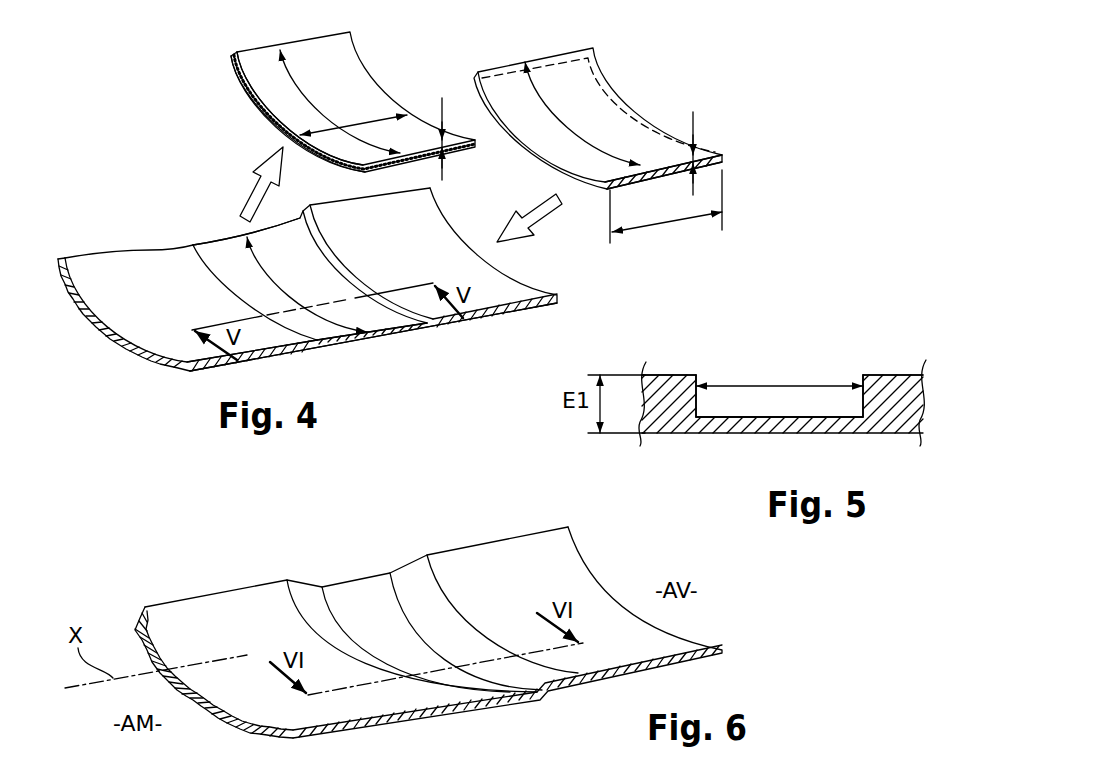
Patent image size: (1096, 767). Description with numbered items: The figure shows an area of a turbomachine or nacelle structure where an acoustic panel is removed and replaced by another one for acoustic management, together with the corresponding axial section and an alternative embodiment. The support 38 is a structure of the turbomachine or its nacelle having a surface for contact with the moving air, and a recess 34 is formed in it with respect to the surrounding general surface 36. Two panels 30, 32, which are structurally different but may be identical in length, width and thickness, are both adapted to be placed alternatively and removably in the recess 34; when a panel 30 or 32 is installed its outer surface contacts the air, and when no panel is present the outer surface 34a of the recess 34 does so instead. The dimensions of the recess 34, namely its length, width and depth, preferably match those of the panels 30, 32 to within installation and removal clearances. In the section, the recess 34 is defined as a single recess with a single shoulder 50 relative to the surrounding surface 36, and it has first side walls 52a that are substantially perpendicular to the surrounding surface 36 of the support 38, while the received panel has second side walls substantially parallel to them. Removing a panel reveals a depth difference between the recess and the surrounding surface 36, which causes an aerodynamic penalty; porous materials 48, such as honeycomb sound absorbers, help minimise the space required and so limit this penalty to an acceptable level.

In FIG. 4, the panel 30 is at (352, 59).
In FIG. 4, the panel 32 is at (563, 52).
In FIG. 4, the recess 34 is at (380, 323).
In FIG. 5, the recess 34 is at (743, 400).
In FIG. 4, the outer surface of the recess 34a is at (222, 252).
In FIG. 5, the outer surface of the recess 34a is at (790, 405).
In FIG. 6, the outer surface of the recess 34a is at (383, 638).
In FIG. 4, the surrounding general surface 36 is at (140, 303).
In FIG. 5, the surrounding general surface 36 is at (897, 372).
In FIG. 6, the surrounding general surface 36 is at (200, 623).
In FIG. 4, the support 38 is at (520, 313).
In FIG. 5, the support 38 is at (890, 425).
In FIG. 4, the porous materials 48 is at (237, 72).
In FIG. 5, the shoulder 50 is at (858, 378).
In FIG. 5, the first side walls 52a is at (699, 400).